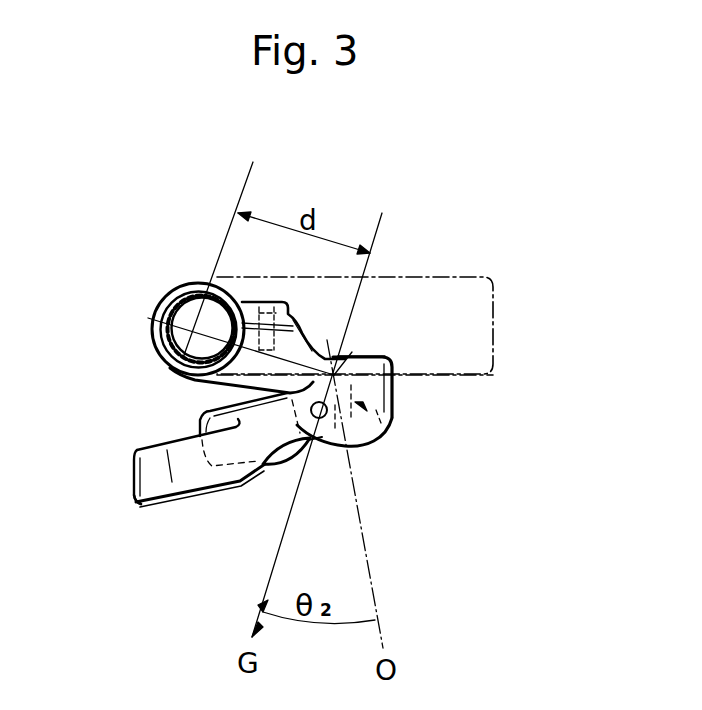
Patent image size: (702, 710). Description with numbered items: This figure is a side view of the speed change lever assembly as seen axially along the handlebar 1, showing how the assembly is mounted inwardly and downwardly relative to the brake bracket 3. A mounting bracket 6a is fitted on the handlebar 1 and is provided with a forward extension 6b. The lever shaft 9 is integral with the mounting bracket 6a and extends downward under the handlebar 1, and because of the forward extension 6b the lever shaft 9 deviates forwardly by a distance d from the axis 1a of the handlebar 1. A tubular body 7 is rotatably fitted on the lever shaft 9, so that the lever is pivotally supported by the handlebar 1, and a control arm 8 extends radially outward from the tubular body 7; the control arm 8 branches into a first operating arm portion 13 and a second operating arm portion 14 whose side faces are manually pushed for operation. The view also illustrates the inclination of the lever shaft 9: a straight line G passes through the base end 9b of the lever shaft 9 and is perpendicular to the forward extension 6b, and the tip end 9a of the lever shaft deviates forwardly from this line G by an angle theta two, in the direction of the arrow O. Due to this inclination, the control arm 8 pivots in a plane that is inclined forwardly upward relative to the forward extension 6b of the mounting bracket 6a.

The handlebar 1 is at (150, 313).
The axis of the handlebar 1a is at (162, 364).
The brake bracket 3 is at (495, 312).
The mounting bracket 6a is at (174, 292).
The forward extension 6b is at (385, 356).
The tubular body 7 is at (397, 390).
The control arm 8 is at (125, 485).
The lever shaft 9 is at (398, 430).
The tip end of the lever shaft 9a is at (368, 442).
The base end of the lever shaft 9b is at (352, 352).
The first operating arm portion 13 is at (198, 415).
The second operating arm portion 14 is at (149, 505).